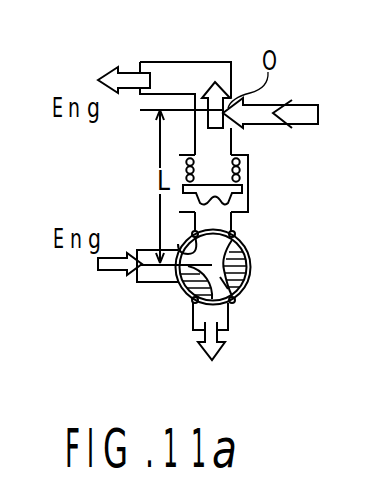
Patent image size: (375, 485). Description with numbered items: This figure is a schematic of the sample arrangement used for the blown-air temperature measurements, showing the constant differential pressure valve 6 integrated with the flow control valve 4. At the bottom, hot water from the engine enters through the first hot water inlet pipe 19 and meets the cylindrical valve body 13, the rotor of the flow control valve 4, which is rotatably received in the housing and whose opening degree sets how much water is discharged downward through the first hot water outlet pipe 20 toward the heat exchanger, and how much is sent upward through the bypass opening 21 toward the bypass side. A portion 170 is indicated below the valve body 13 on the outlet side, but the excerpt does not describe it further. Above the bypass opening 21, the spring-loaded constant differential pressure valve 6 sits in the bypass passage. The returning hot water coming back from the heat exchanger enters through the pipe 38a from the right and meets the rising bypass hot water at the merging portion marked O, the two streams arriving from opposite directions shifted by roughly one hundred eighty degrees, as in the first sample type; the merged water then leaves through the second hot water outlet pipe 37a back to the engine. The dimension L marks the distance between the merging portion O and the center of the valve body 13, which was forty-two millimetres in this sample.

The second hot water outlet pipe 37a is at (165, 63).
The inlet passage from engine 38a is at (275, 130).
The constant differential pressure valve 6 is at (243, 192).
The bypass opening 21 is at (233, 226).
The flow control valve 4 is at (255, 278).
The valve body 13 is at (249, 259).
The first hot water inlet pipe 19 is at (153, 283).
The outlet chamber 170 is at (224, 310).
The first hot water outlet pipe 20 is at (226, 322).